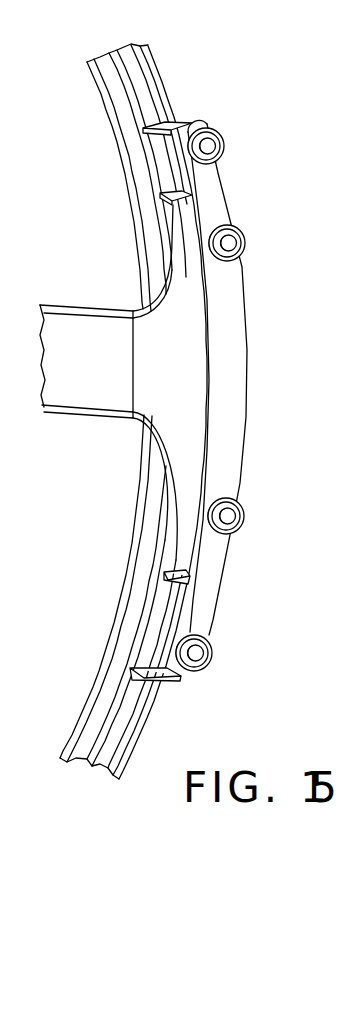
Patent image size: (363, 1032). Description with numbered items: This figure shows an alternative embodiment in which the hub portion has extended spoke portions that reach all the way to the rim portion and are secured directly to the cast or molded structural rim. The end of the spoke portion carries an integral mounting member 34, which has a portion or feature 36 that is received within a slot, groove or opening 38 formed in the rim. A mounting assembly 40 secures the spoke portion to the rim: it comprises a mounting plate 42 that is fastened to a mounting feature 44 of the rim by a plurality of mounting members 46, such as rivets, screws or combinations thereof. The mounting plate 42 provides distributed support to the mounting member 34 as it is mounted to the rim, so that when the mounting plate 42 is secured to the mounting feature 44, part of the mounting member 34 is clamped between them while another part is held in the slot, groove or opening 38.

The mounting member 34 is at (172, 382).
The portion or feature 36 is at (172, 199).
The slot, groove or opening 38 is at (130, 80).
The mounting assembly 40 is at (245, 406).
The mounting plate 42 is at (220, 210).
The mounting feature 44 is at (161, 126).
The mounting members 46 is at (242, 527).